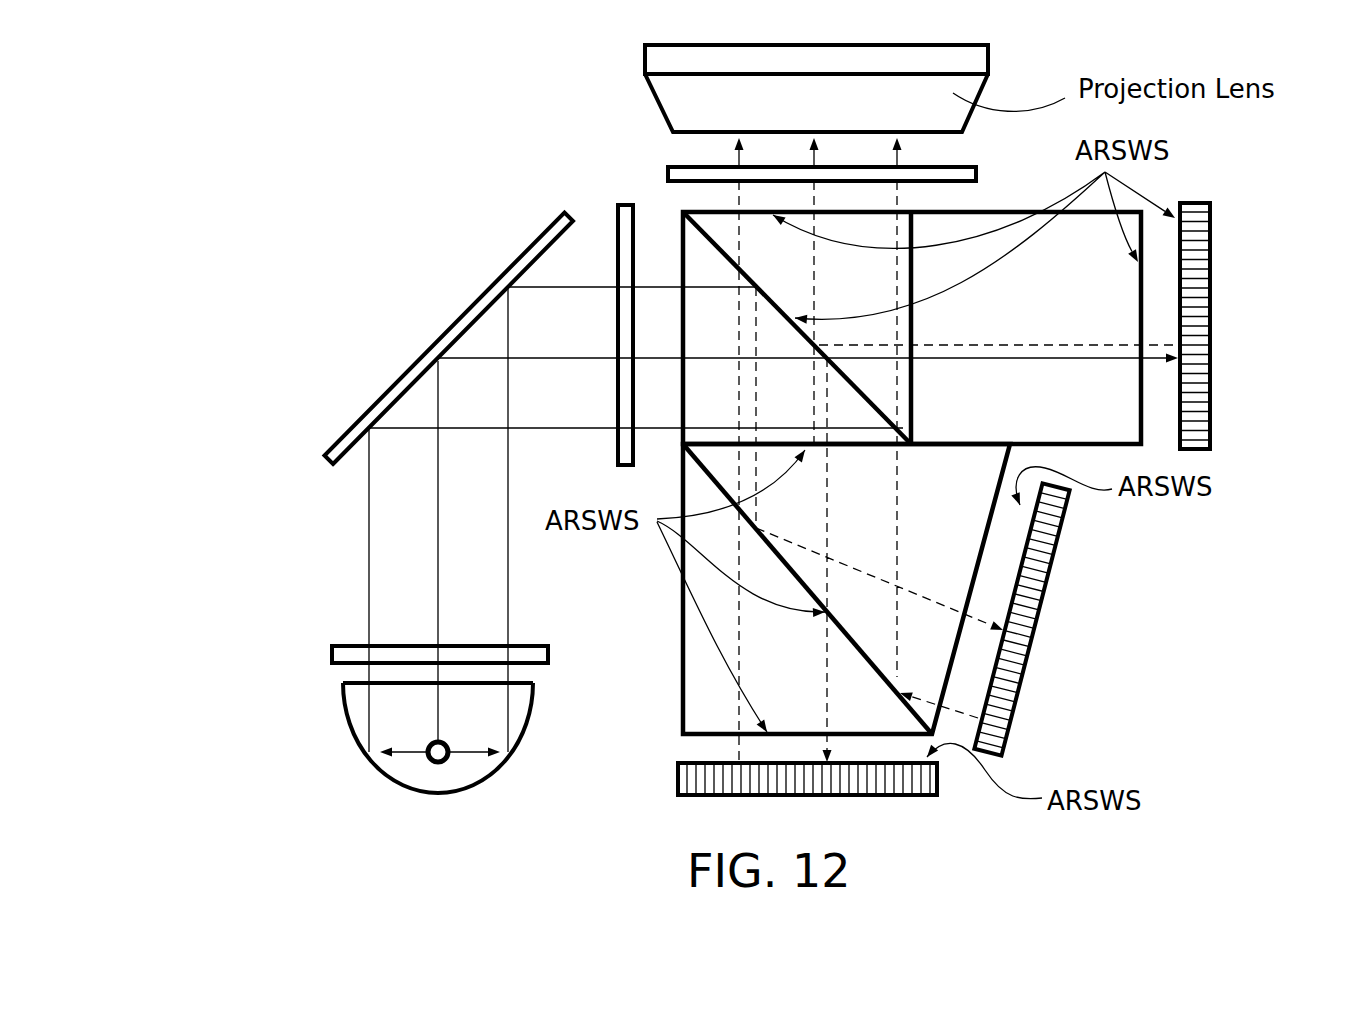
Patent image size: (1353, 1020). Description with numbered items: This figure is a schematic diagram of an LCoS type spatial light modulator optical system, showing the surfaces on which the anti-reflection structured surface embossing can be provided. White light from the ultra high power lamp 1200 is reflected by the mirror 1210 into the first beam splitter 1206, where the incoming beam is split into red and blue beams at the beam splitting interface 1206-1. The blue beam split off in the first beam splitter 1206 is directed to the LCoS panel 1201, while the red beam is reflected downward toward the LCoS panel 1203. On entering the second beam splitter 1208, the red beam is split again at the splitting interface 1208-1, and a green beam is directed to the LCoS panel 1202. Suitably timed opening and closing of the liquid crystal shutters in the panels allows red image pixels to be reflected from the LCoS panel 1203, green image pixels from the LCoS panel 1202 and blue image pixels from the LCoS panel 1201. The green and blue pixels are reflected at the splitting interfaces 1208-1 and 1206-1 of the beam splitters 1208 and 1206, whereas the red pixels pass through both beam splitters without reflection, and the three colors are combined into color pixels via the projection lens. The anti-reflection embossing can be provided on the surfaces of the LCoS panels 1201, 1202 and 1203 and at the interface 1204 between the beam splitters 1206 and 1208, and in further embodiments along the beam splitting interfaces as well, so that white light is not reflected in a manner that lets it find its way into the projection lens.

The ultra high power lamp 1200 is at (377, 772).
The LCoS panel 1201 is at (1212, 446).
The LCoS panel 1202 is at (1058, 557).
The LCoS panel 1203 is at (900, 796).
The interface 1204 is at (722, 447).
The first beam splitter 1206 is at (702, 260).
The beam splitting interface 1206-1 is at (867, 397).
The second beam splitter 1208 is at (707, 683).
The splitting interface 1208-1 is at (868, 658).
The mirror 1210 is at (435, 333).